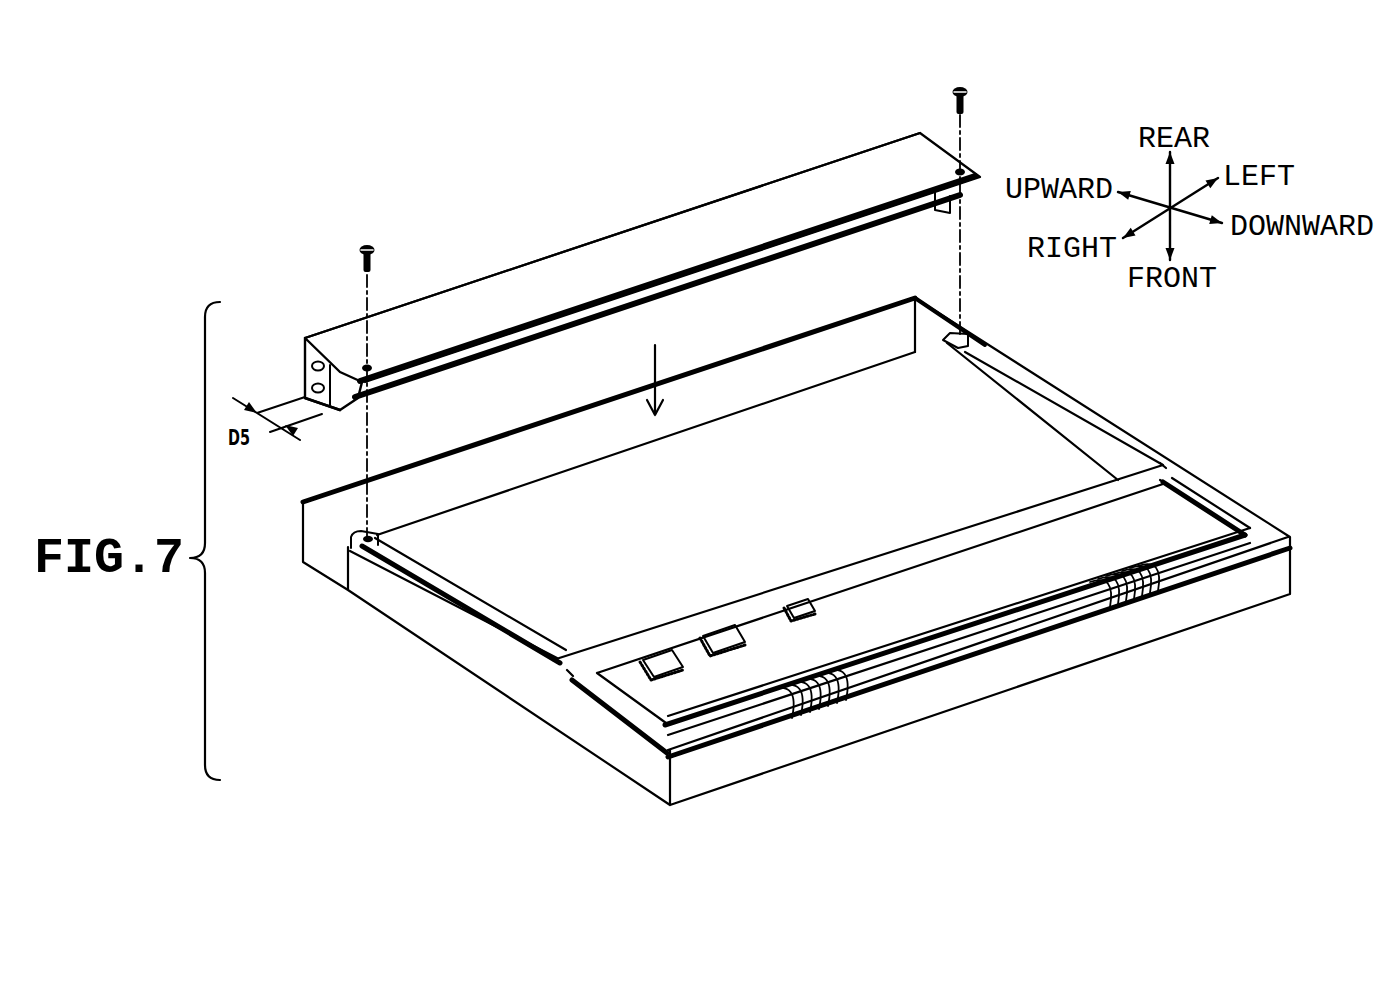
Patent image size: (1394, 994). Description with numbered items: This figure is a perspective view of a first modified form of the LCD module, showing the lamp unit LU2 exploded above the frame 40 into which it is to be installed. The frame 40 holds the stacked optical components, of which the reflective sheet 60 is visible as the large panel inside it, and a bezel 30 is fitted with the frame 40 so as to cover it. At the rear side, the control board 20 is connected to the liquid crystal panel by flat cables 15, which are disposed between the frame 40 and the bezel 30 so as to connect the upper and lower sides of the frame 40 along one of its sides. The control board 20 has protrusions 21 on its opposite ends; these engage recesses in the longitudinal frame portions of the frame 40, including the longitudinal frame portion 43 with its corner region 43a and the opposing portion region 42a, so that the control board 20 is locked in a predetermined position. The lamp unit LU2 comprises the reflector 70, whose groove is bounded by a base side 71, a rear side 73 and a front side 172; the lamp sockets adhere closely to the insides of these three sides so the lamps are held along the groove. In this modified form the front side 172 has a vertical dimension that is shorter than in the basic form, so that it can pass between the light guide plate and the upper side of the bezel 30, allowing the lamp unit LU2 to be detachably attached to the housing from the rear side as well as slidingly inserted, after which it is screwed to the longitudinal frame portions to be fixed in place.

The flat cables 15 is at (1177, 593).
The control board 20 is at (960, 600).
The protrusions 21 is at (572, 673).
The bezel 30 is at (950, 692).
The frame 40 is at (873, 672).
The longitudinal frame portion region 42a is at (552, 672).
The longitudinal frame portion 43 is at (1232, 508).
The longitudinal frame portion region 43a is at (1167, 467).
The reflective sheet 60 is at (1032, 428).
The reflector 70 is at (537, 262).
The base side 71 is at (305, 356).
The rear side 73 is at (613, 243).
The front side 172 is at (327, 410).
The lamp unit LU2 is at (435, 295).